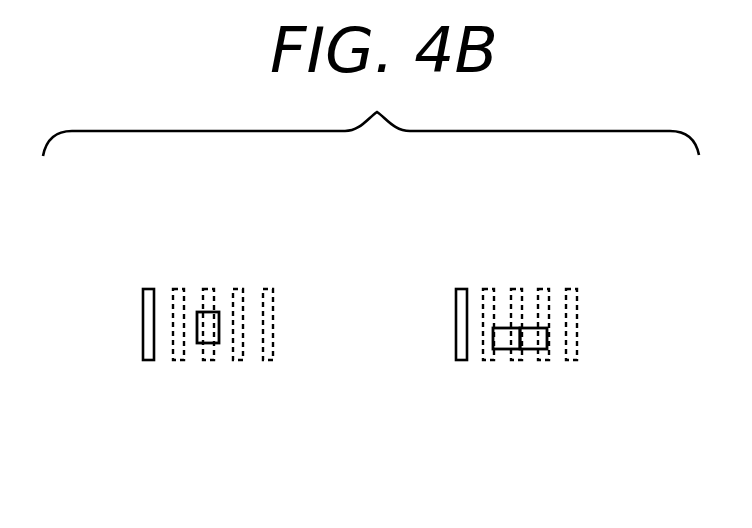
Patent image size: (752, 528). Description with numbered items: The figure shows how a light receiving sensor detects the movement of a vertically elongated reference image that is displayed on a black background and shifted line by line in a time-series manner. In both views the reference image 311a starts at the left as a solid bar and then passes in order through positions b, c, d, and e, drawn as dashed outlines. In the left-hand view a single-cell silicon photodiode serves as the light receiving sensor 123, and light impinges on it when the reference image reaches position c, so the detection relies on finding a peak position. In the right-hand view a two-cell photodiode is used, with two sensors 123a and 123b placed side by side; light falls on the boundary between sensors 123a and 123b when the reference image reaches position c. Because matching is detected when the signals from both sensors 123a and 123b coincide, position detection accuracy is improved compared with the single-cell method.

The reference image at position a 311a is at (149, 288).
The position b is at (179, 288).
The position c is at (209, 288).
The position d is at (239, 288).
The position e is at (269, 288).
The light receiving sensor 123 is at (207, 343).
The first sensor 123a is at (505, 350).
The second sensor 123b is at (532, 350).